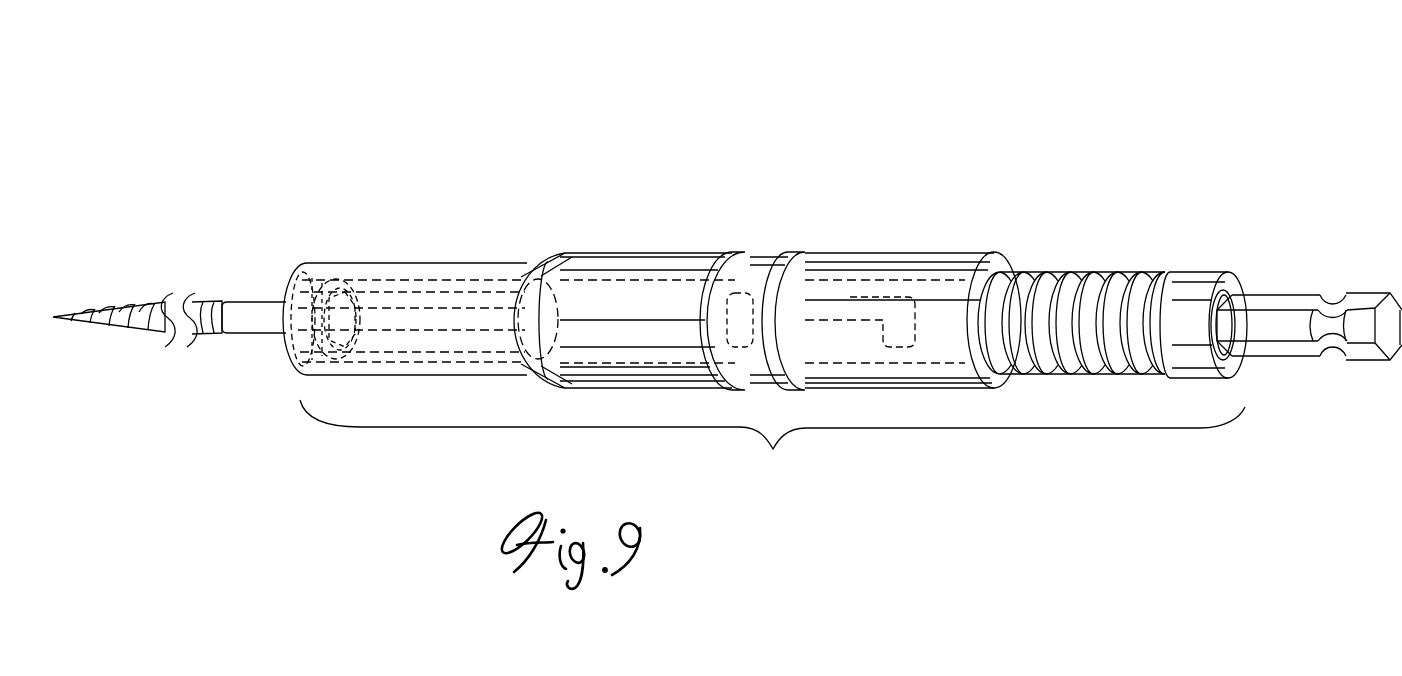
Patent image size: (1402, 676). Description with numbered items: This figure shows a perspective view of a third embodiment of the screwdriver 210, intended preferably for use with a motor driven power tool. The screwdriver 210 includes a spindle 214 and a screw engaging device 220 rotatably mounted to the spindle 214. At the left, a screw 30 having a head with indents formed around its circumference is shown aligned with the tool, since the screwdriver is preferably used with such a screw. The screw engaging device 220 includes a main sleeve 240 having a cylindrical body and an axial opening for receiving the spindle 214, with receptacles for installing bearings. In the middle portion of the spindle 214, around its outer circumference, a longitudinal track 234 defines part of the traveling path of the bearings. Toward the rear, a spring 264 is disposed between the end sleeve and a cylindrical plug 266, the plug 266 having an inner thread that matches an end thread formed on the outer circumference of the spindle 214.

The screw 30 is at (127, 300).
The screwdriver 210 is at (601, 185).
The spindle 214 is at (650, 258).
The screw engaging device 220 is at (772, 443).
The longitudinal track 234 is at (850, 297).
The main sleeve 240 is at (432, 265).
The spring 264 is at (1108, 272).
The cylindrical plug 266 is at (1205, 272).